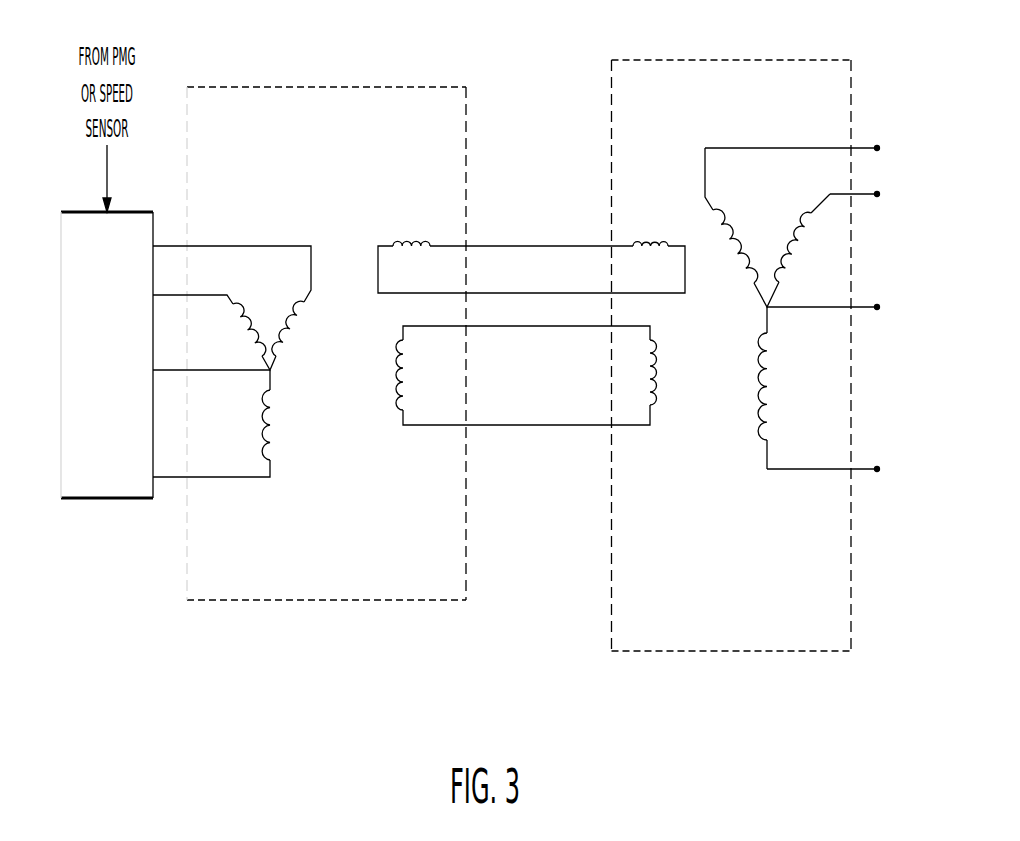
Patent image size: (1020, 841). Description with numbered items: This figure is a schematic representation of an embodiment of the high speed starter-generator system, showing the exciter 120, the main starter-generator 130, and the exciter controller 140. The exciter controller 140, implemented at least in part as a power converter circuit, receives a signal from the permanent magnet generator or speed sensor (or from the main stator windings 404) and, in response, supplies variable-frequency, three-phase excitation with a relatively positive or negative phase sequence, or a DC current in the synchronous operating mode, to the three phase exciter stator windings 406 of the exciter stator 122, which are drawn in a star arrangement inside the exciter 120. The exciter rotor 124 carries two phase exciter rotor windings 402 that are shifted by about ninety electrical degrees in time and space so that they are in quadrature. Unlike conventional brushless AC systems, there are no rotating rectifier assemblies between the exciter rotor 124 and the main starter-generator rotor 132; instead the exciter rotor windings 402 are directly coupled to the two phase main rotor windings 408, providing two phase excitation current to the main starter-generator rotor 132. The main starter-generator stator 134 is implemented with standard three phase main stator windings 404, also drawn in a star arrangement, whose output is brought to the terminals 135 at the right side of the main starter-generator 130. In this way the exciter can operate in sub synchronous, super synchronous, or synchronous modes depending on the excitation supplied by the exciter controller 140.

The exciter 120 is at (333, 87).
The exciter stator 122 is at (245, 294).
The exciter rotor 124 is at (530, 268).
The main starter-generator 130 is at (724, 60).
The main starter-generator rotor 132 is at (664, 257).
The main starter-generator stator 134 is at (767, 243).
The output terminals 135 is at (866, 147).
The exciter controller 140 is at (105, 499).
The exciter rotor windings 402 is at (446, 227).
The main stator windings 404 is at (740, 228).
The exciter stator windings 406 is at (267, 227).
The main rotor windings 408 is at (665, 246).